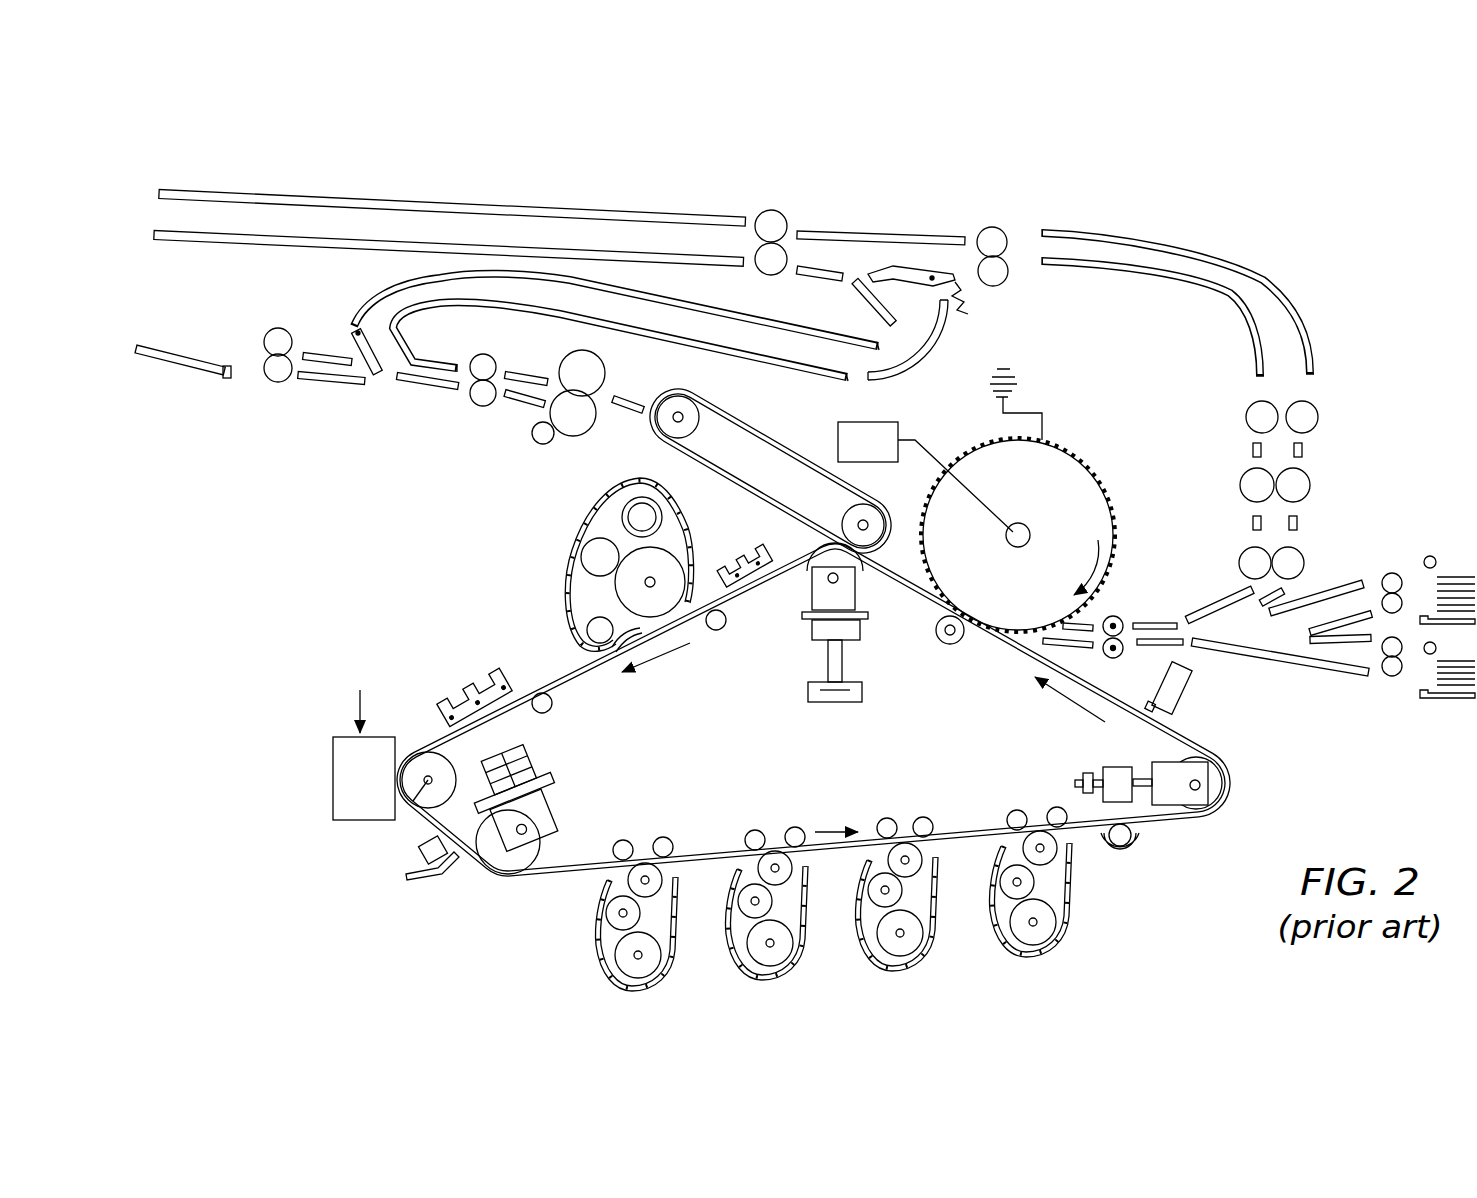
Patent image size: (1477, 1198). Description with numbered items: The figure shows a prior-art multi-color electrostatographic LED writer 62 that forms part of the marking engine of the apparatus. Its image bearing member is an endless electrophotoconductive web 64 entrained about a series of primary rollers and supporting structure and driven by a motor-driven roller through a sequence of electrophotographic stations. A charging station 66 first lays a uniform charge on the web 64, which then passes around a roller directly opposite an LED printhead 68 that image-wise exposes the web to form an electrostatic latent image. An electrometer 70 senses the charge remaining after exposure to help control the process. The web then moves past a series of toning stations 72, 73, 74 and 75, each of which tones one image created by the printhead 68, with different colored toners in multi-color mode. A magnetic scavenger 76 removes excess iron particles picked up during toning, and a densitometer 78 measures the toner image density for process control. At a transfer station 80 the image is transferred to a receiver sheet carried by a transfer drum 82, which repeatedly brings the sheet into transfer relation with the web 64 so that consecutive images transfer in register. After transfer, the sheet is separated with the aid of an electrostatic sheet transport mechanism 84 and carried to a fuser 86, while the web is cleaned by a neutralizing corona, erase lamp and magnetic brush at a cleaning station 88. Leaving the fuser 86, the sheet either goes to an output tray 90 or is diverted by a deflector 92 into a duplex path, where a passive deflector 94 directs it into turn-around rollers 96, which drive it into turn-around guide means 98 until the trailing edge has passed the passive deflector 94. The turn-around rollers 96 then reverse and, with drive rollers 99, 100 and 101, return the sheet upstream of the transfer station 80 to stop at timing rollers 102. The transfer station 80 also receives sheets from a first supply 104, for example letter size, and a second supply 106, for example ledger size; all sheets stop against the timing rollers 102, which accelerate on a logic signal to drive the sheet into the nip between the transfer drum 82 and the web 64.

The LED writer 62 is at (1160, 226).
The endless electrophotoconductive web 64 is at (559, 880).
The charging station 66 is at (471, 690).
The LED printhead 68 is at (345, 737).
The electrometer 70 is at (434, 880).
The toning station 72 is at (675, 957).
The toning station 73 is at (807, 958).
The toning station 74 is at (927, 960).
The toning station 75 is at (1063, 947).
The magnetic scavenger 76 is at (1125, 851).
The densitometer 78 is at (1195, 706).
The transfer station 80 is at (1130, 592).
The transfer drum 82 is at (1100, 513).
The electrostatic sheet transport mechanism 84 is at (767, 446).
The fuser 86 is at (606, 377).
The cleaning station 88 is at (714, 540).
The output tray 90 is at (205, 378).
The deflector 92 is at (378, 378).
The passive deflector 94 is at (893, 278).
The turn-around rollers 96 is at (770, 232).
The turn-around guide means 98 is at (528, 226).
The drive rollers 99 is at (993, 240).
The drive rollers 100 is at (1313, 418).
The drive rollers 101 is at (1293, 560).
The timing rollers 102 is at (1117, 658).
The first supply 104 is at (1412, 565).
The second supply 106 is at (1410, 684).